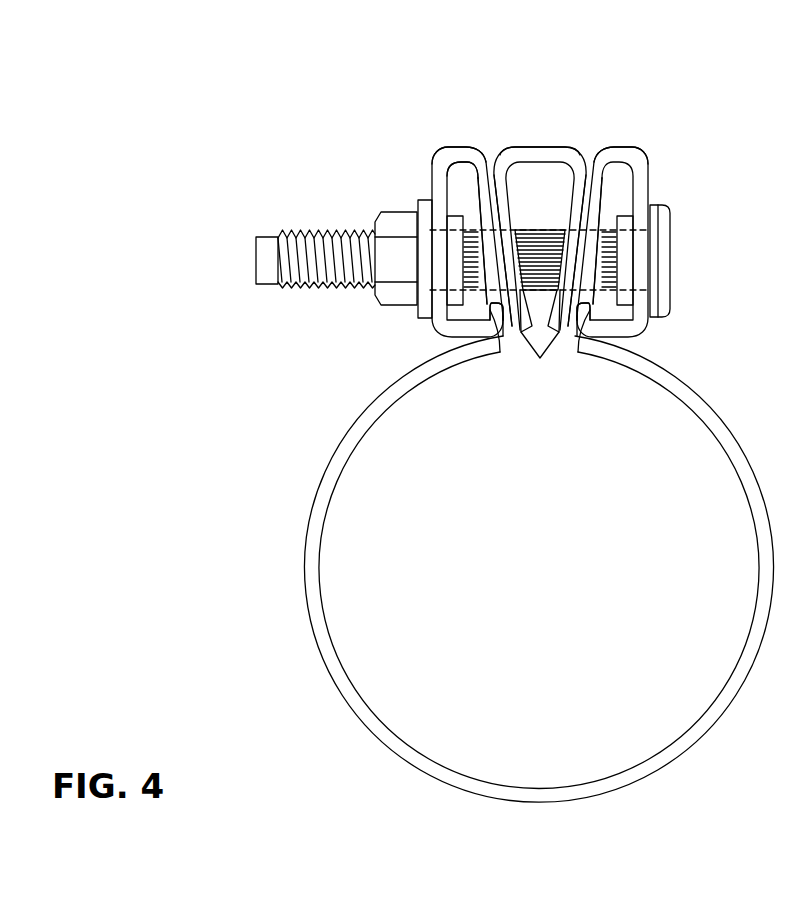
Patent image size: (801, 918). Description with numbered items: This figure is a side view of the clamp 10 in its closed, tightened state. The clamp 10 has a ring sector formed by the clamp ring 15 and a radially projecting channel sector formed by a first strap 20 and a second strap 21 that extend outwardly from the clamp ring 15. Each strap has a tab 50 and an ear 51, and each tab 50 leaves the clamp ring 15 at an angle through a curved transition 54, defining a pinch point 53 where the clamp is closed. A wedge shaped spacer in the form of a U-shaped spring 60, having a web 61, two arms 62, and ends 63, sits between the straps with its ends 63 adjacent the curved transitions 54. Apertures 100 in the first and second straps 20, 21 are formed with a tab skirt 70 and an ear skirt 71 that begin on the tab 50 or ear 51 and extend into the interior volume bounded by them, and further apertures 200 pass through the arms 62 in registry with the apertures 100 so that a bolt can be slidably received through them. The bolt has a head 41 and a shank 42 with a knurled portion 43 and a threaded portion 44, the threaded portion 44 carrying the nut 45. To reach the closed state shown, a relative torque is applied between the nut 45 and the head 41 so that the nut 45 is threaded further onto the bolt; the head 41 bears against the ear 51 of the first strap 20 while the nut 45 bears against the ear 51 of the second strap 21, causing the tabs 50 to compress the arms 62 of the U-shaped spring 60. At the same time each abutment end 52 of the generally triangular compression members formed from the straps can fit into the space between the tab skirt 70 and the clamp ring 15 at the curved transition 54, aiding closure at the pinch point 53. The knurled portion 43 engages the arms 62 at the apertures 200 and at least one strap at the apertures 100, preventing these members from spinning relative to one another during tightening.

The clamp 10 is at (199, 93).
The clamp ring 15 is at (316, 602).
The first strap 20 is at (646, 94).
The second strap 21 is at (452, 80).
The head 41 is at (663, 238).
The shank 42 is at (478, 272).
The knurled portion 43 is at (538, 245).
The threaded portion 44 is at (293, 250).
The nut 45 is at (398, 230).
The tab 50 is at (482, 182).
The ear 51 is at (444, 163).
The abutment end 52 is at (478, 328).
The pinch point 53 is at (490, 327).
The curved transition 54 is at (501, 340).
The U-shaped spring 60 is at (549, 78).
The web 61 is at (541, 158).
The arms 62 is at (502, 192).
The ends 63 is at (540, 357).
The tab skirt 70 is at (457, 222).
The ear skirt 71 is at (452, 176).
The apertures 100 is at (438, 275).
The apertures 200 is at (518, 332).